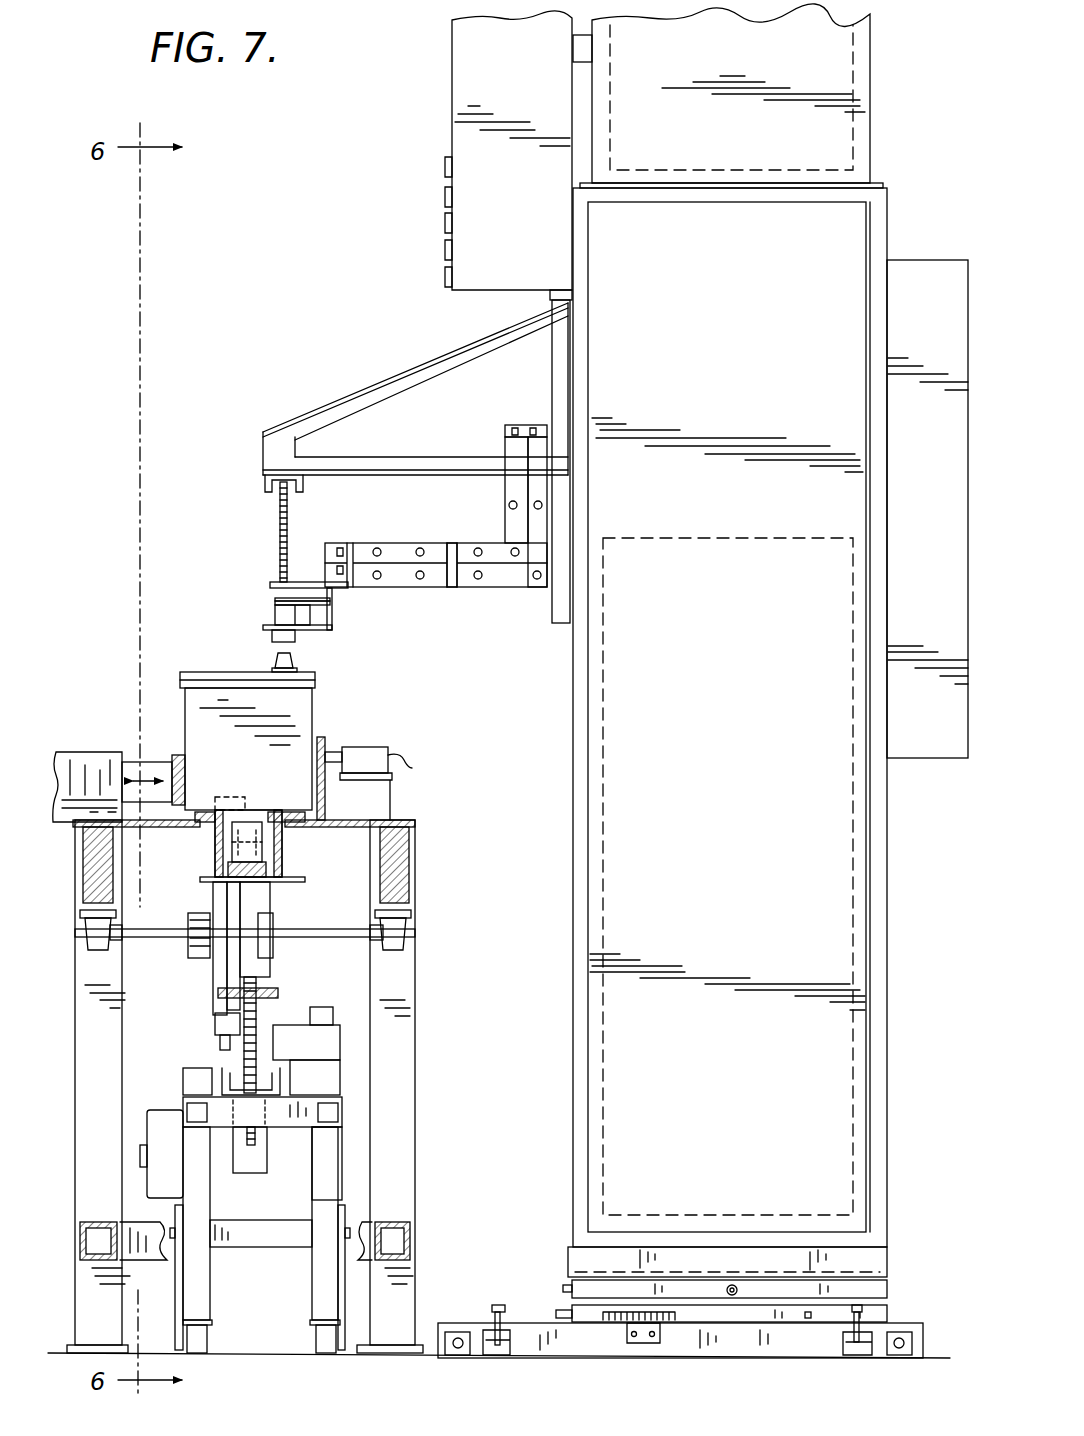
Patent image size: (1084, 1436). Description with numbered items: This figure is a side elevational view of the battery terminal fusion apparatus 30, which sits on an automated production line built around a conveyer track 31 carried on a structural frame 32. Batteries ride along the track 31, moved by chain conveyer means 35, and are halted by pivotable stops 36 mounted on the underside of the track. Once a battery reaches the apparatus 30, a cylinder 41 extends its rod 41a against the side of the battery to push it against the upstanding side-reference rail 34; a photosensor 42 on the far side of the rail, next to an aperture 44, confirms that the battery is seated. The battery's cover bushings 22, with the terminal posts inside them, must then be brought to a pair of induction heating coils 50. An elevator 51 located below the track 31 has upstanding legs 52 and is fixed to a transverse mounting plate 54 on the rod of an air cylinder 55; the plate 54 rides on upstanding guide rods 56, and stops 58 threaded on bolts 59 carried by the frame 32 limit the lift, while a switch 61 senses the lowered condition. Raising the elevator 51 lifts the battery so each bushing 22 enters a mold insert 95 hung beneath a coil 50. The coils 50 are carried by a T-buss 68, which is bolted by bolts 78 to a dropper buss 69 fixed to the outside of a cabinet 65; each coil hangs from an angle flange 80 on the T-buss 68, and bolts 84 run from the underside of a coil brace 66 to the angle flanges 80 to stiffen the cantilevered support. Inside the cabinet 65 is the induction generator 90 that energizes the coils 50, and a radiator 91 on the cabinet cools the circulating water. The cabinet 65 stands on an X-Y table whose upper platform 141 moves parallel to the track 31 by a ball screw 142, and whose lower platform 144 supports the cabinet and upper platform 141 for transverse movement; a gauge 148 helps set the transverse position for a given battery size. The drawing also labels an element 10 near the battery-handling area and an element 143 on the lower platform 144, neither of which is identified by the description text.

The container 10 is at (175, 662).
The cover bushing 22 is at (294, 662).
The terminal post and bushing fusion apparatus 30 is at (425, 160).
The conveyer track 31 is at (205, 822).
The structural frame 32 is at (402, 1032).
The side-reference rail 34 is at (318, 745).
The chain conveyer means 35 is at (200, 810).
The pivotable stops 36 is at (232, 797).
The cylinder 41 is at (92, 755).
The rod 41a is at (150, 760).
The photosensor 42 is at (400, 762).
The aperture 44 is at (352, 748).
The induction heating coils 50 is at (268, 600).
The elevator 51 is at (212, 968).
The upstanding legs 52 is at (215, 862).
The transverse mounting plate 54 is at (213, 1026).
The air cylinder 55 is at (253, 1165).
The guide rods 56 is at (258, 975).
The stops 58 is at (280, 992).
The upstanding bolts 59 is at (262, 1062).
The switch 61 is at (192, 1082).
The cabinet 65 is at (600, 405).
The coil brace 66 is at (360, 396).
The T-buss 68 is at (376, 545).
The dropper buss 69 is at (504, 518).
The bolts 78 is at (440, 545).
The angle flange 80 is at (300, 580).
The bolts 84 is at (280, 530).
The induction generator 90 is at (736, 540).
The radiator 91 is at (860, 64).
The mold insert 95 is at (270, 637).
The upper platform 141 is at (840, 1288).
The ball screw 142 is at (733, 1285).
The stop 143 is at (558, 1312).
The lower platform 144 is at (752, 1315).
The gauge 148 is at (615, 1318).